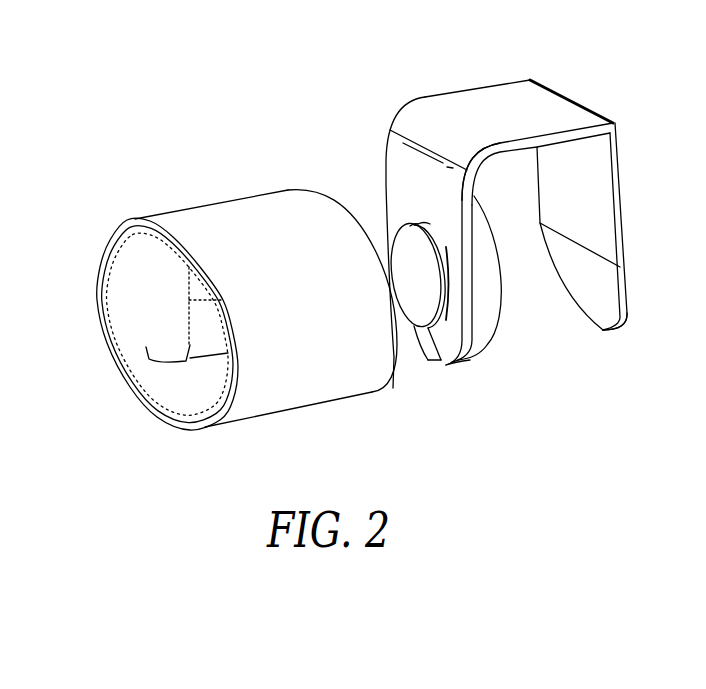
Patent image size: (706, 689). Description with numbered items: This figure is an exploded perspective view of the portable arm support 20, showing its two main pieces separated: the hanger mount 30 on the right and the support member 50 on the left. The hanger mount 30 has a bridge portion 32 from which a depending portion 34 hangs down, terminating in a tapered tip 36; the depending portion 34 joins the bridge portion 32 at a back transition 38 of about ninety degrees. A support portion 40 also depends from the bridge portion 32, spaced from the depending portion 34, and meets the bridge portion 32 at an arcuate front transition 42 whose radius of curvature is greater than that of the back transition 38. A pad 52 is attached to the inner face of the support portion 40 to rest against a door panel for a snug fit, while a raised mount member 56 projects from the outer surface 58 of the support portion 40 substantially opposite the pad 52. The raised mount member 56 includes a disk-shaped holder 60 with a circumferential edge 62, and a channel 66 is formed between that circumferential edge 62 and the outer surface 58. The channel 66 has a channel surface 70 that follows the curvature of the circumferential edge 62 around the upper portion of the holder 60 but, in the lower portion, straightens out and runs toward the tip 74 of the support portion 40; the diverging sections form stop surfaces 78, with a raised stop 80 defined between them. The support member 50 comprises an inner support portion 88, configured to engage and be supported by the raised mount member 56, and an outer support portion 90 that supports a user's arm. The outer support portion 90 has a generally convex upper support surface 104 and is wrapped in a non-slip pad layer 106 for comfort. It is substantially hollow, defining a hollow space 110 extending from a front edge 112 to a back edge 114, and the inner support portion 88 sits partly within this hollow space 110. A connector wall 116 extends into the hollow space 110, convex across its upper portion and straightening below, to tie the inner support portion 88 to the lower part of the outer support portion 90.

The portable arm support 20 is at (388, 438).
The hanger mount 30 is at (577, 78).
The bridge portion 32 is at (490, 103).
The depending portion 34 is at (623, 188).
The tapered tip 36 is at (603, 332).
The back transition 38 is at (622, 118).
The support portion 40 is at (384, 176).
The front transition 42 is at (491, 169).
The support member 50 is at (234, 438).
The pad 52 is at (488, 310).
The raised mount member 56 is at (420, 325).
The outer surface 58 is at (453, 233).
The disk-shaped holder 60 is at (408, 253).
The circumferential edge 62 is at (412, 223).
The channel 66 is at (428, 220).
The channel surface 70 is at (442, 270).
The tip 74 is at (462, 364).
The stop surfaces 78 is at (438, 343).
The raised stop 80 is at (417, 306).
The inner support portion 88 is at (191, 365).
The outer support portion 90 is at (112, 325).
The upper support surface 104 is at (250, 221).
The non-slip pad layer 106 is at (122, 221).
The hollow space 110 is at (132, 258).
The front edge 112 is at (112, 350).
The back edge 114 is at (325, 197).
The connector wall 116 is at (190, 293).